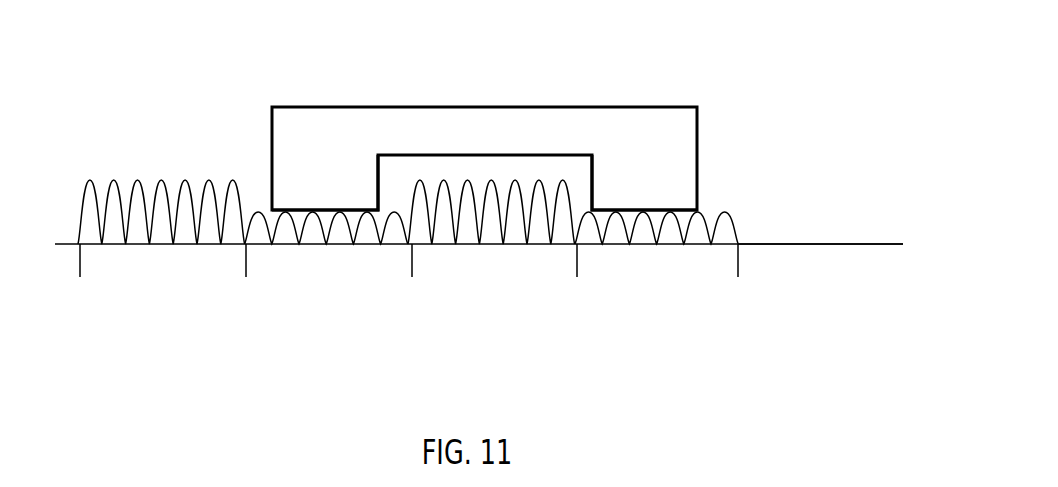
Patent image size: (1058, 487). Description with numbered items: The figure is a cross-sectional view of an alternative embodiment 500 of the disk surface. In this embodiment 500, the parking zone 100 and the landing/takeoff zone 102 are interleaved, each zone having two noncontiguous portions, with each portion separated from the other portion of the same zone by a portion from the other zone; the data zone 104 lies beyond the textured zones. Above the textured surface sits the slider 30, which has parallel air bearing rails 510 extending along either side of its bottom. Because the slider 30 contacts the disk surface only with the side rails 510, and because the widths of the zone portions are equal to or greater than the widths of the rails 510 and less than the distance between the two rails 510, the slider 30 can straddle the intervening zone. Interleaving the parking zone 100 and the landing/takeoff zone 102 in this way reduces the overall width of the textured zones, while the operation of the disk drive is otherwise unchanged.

The slider 30 is at (543, 107).
The air bearing rails 510 is at (313, 165).
The parking zone 100 is at (326, 244).
The landing/takeoff zone 102 is at (492, 260).
The data zone 104 is at (820, 275).
The alternative embodiment 500 is at (178, 373).